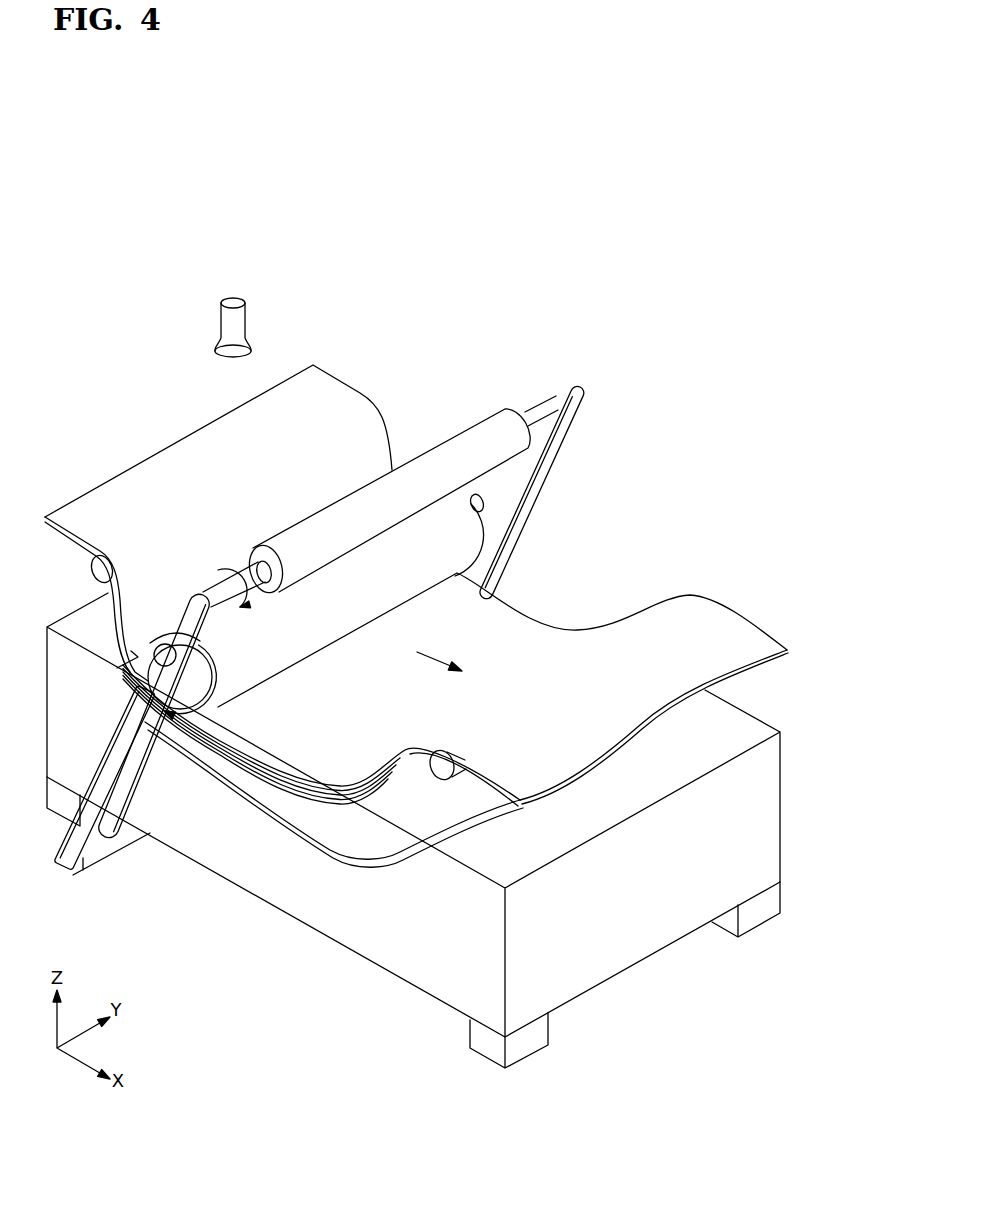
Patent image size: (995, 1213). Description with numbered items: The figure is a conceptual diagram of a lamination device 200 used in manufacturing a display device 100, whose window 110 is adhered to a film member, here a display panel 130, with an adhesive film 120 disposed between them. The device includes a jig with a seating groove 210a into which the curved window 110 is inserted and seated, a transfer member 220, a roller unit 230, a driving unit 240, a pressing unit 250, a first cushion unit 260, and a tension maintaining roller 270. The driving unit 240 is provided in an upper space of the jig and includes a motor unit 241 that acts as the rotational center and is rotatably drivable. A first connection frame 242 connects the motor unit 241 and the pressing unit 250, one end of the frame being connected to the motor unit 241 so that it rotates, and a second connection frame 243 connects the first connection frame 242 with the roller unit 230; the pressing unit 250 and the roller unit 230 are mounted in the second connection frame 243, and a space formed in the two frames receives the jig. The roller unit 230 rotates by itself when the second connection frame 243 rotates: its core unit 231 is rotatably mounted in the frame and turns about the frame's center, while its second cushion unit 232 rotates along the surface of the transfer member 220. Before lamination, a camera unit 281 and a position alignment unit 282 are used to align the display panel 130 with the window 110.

The display device 100 is at (320, 830).
The window 110 is at (225, 790).
The adhesive film 120 is at (262, 783).
The display panel 130 is at (292, 785).
The lamination device 200 is at (727, 336).
The seating groove 210a is at (393, 864).
The transfer member 220 is at (743, 633).
The roller unit 230 is at (212, 495).
The core unit 231 is at (153, 630).
The second cushion unit 232 is at (186, 612).
The driving unit 240 is at (506, 307).
The motor unit 241 is at (477, 438).
The first connection frame 242 is at (540, 412).
The second connection frame 243 is at (483, 505).
The pressing unit 250 is at (60, 882).
The first cushion unit 260 is at (376, 860).
The tension maintaining roller 270 is at (442, 765).
The camera unit 281 is at (234, 300).
The position alignment unit 282 is at (545, 1030).